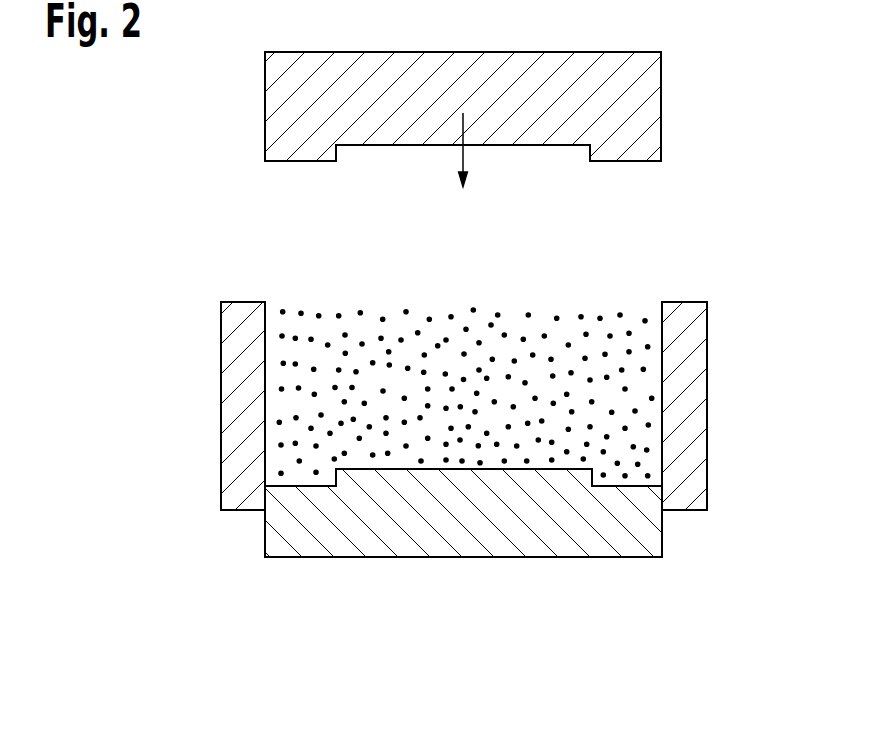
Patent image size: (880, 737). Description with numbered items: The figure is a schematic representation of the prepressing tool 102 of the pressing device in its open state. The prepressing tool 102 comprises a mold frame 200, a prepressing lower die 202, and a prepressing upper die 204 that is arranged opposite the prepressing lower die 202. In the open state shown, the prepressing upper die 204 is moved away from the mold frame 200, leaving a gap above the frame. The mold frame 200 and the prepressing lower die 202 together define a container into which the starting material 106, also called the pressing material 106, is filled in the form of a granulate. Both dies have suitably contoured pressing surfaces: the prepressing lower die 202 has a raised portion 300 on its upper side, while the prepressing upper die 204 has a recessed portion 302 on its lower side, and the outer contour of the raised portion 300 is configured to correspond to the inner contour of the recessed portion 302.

The prepressing tool 102 is at (132, 132).
The starting material 106 is at (339, 317).
The mold frame 200 is at (245, 302).
The prepressing lower die 202 is at (663, 532).
The prepressing upper die 204 is at (663, 79).
The raised portion 300 is at (395, 470).
The recessed portion 302 is at (539, 168).